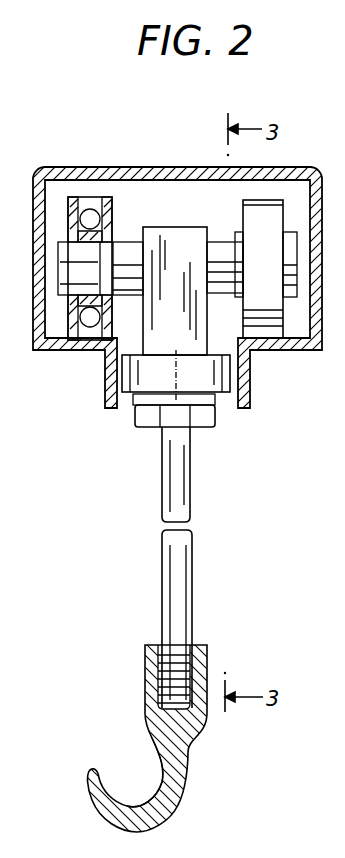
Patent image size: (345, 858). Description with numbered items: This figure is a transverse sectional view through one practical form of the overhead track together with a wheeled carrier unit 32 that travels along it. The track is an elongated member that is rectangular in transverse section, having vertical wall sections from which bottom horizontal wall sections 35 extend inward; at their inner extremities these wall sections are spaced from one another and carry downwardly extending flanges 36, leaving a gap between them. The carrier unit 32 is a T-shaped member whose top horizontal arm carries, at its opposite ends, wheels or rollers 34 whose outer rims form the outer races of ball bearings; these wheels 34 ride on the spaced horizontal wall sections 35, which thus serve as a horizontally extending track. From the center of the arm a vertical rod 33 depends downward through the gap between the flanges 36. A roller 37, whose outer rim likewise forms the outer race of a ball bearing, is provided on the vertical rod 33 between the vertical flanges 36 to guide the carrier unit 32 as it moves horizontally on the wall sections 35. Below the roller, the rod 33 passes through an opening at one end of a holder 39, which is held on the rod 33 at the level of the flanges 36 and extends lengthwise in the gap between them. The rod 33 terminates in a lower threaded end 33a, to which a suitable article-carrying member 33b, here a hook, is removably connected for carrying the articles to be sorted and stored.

The carrier unit 32 is at (192, 485).
The vertical rod 33 is at (193, 567).
The lower threaded end 33a is at (197, 651).
The article carrying member 33b is at (167, 808).
The wheel 34 is at (80, 213).
The bottom horizontal wall section 35 is at (48, 352).
The downwardly extending flange 36 is at (106, 399).
The roller 37 is at (233, 372).
The holder 39 is at (135, 406).